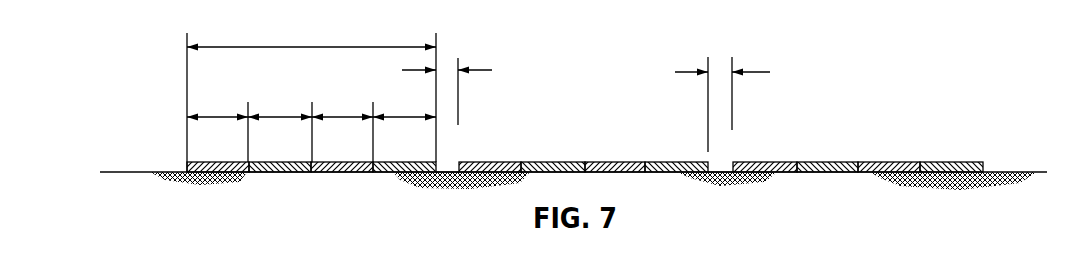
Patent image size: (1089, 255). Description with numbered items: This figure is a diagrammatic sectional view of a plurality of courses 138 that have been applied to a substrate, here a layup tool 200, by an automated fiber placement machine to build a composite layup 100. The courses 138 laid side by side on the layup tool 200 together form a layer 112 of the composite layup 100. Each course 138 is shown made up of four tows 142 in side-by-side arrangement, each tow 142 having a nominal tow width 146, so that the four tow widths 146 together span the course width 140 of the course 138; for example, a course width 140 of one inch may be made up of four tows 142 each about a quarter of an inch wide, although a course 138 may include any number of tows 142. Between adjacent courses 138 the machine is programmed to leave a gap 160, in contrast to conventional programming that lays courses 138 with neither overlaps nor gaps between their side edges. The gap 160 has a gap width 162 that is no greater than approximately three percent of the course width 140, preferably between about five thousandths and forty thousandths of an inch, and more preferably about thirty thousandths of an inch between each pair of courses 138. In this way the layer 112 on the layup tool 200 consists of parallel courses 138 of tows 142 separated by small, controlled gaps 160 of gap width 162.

The composite layup 100 is at (557, 105).
The layer 112 is at (992, 162).
The course 138 is at (183, 163).
The course width 140 is at (284, 47).
The tow 142 is at (195, 161).
The tow width 146 is at (213, 115).
The gap 160 is at (447, 159).
The gap width 162 is at (492, 70).
The layup tool 200 is at (119, 168).